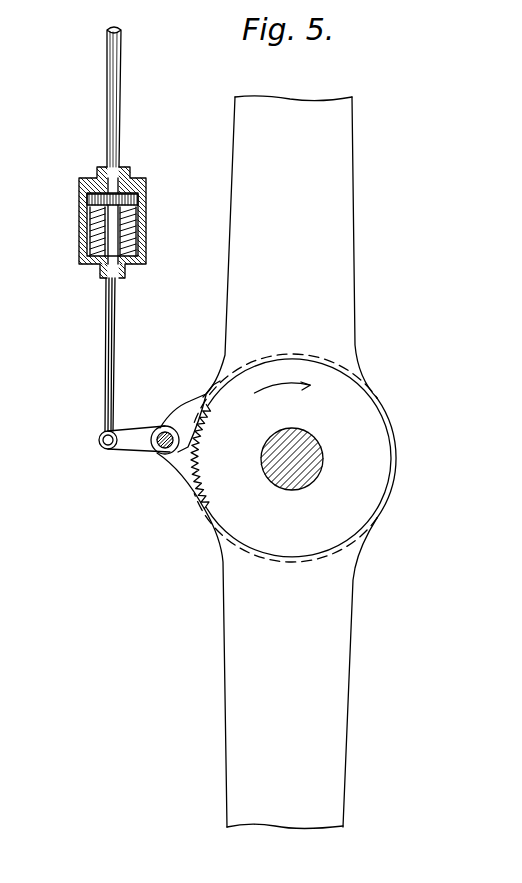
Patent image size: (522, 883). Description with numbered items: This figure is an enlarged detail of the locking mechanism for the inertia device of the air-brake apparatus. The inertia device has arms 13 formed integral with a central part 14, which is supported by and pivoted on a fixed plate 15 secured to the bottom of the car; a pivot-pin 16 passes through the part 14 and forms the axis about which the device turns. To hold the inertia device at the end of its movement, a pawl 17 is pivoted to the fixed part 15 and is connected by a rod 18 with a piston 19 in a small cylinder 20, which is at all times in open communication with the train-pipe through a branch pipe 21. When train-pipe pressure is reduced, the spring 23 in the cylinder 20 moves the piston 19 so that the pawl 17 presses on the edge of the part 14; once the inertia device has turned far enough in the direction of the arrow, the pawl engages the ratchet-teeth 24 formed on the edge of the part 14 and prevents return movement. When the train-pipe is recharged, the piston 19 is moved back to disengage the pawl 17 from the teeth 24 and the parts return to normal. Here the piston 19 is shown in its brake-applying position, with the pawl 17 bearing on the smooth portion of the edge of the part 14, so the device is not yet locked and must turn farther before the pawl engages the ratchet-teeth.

The arms 13 is at (276, 462).
The central part 14 is at (298, 458).
The fixed plate 15 is at (403, 487).
The pivot-pin 16 is at (262, 457).
The pawl 17 is at (178, 415).
The rod 18 is at (122, 331).
The piston 19 is at (145, 198).
The cylinder 20 is at (79, 229).
The branch pipe 21 is at (122, 108).
The spring 23 is at (127, 236).
The ratchet-teeth 24 is at (198, 472).